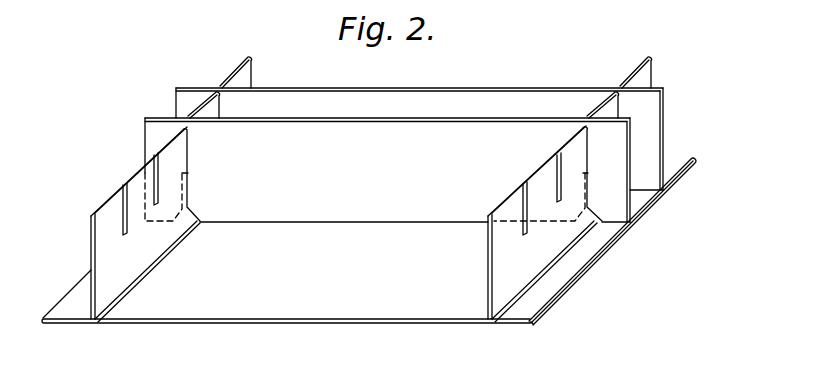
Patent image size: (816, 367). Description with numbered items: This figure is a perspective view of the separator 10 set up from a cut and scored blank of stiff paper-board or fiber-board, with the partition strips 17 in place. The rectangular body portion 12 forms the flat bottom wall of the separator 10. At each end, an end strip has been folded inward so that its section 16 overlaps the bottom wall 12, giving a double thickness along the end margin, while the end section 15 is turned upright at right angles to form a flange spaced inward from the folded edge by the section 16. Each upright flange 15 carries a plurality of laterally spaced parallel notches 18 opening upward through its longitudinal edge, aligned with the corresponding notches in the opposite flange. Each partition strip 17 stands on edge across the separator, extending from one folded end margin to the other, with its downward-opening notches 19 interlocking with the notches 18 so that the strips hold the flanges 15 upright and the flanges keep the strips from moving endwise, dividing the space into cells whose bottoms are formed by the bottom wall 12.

The separator 10 is at (80, 331).
The body portion 12 is at (197, 327).
The end section 15 is at (104, 202).
The section 16 is at (72, 302).
The partition strip 17 is at (173, 87).
The notch 18 is at (123, 182).
The notch 19 is at (188, 188).